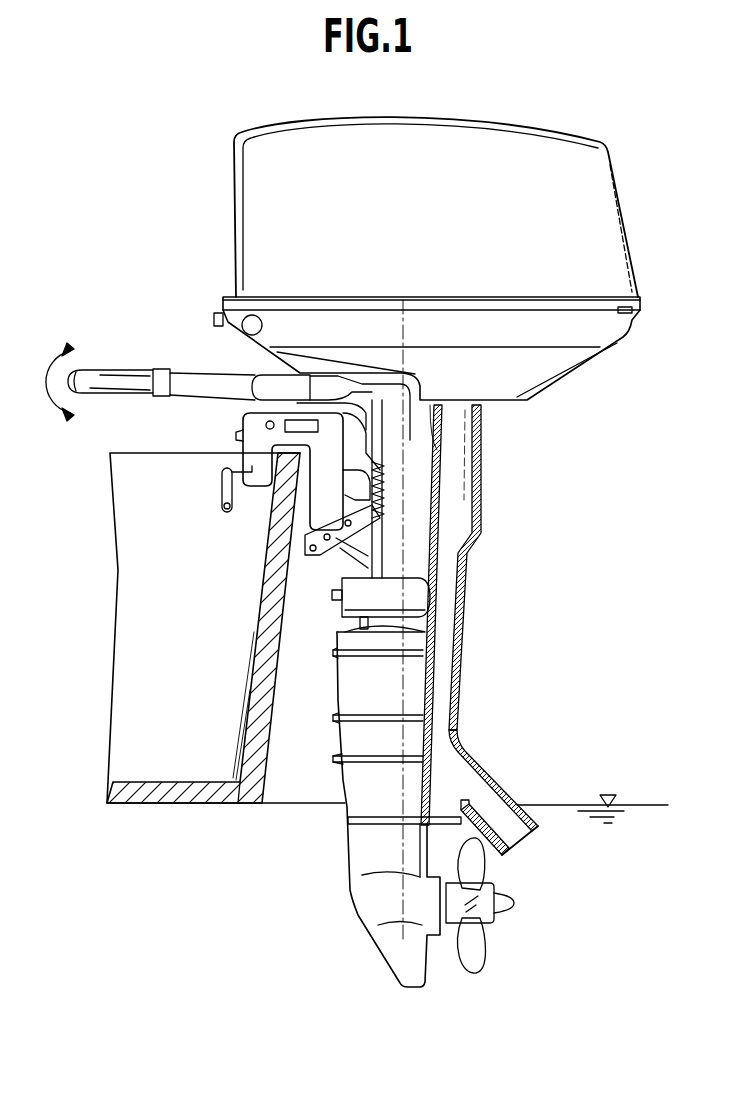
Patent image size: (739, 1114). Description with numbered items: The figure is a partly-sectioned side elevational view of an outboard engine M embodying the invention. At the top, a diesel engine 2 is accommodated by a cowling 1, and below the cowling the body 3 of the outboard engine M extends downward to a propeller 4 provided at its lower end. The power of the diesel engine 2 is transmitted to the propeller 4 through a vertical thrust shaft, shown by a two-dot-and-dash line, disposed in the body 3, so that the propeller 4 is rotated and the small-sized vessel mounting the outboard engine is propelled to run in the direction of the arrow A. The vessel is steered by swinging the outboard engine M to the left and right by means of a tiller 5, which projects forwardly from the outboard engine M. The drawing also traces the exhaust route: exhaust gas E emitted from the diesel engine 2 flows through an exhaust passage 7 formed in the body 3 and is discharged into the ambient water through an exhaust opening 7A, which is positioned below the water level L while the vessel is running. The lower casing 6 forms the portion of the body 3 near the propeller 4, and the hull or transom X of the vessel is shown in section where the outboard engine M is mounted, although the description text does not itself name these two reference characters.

The cowling 1 is at (457, 120).
The diesel engine 2 is at (250, 252).
The body of the outboard engine 3 is at (478, 473).
The propeller 4 is at (477, 954).
The tiller 5 is at (111, 376).
The lower casing (gear case) 6 is at (402, 732).
The exhaust passage 7 is at (458, 523).
The exhaust opening 7A is at (513, 845).
The outboard engine M is at (542, 118).
The direction of running (arrow A) A is at (178, 180).
The exhaust gas E is at (460, 380).
The water level L is at (627, 802).
The boat transom (hull) X is at (152, 797).